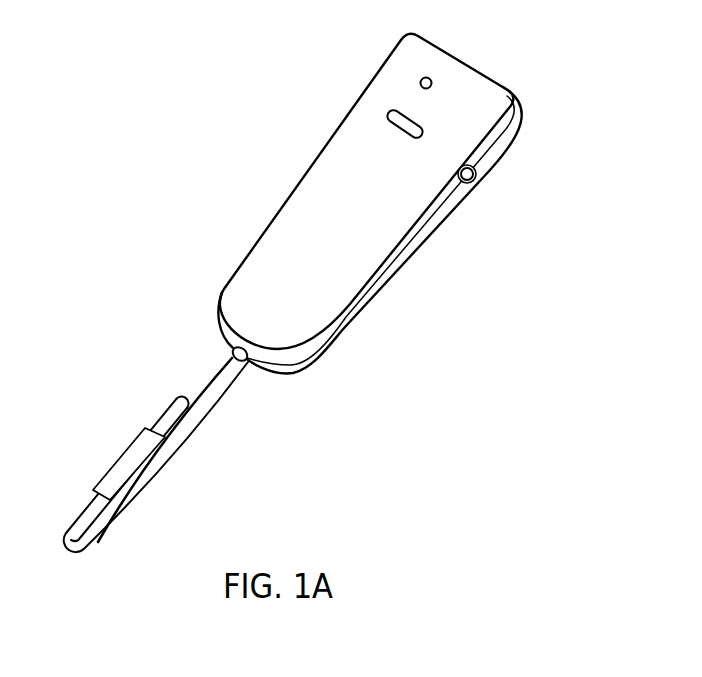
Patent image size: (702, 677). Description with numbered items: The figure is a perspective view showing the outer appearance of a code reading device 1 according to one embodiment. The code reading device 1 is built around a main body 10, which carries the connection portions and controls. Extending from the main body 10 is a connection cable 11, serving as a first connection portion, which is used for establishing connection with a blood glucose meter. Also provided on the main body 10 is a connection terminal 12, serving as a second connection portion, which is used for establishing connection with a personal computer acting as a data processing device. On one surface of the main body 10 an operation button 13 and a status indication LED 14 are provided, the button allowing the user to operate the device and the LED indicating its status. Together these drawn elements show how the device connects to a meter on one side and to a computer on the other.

The code reading device 1 is at (268, 82).
The main body 10 is at (426, 236).
The connection cable 11 is at (125, 463).
The connection terminal 12 is at (476, 180).
The operation button 13 is at (389, 111).
The status indication LED 14 is at (432, 78).